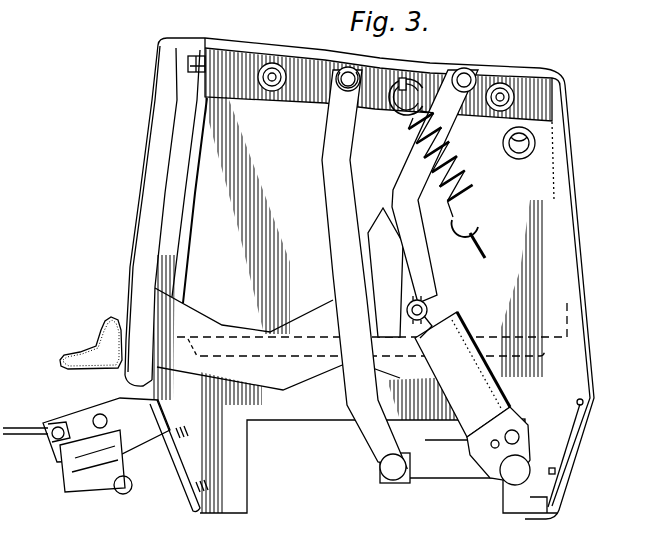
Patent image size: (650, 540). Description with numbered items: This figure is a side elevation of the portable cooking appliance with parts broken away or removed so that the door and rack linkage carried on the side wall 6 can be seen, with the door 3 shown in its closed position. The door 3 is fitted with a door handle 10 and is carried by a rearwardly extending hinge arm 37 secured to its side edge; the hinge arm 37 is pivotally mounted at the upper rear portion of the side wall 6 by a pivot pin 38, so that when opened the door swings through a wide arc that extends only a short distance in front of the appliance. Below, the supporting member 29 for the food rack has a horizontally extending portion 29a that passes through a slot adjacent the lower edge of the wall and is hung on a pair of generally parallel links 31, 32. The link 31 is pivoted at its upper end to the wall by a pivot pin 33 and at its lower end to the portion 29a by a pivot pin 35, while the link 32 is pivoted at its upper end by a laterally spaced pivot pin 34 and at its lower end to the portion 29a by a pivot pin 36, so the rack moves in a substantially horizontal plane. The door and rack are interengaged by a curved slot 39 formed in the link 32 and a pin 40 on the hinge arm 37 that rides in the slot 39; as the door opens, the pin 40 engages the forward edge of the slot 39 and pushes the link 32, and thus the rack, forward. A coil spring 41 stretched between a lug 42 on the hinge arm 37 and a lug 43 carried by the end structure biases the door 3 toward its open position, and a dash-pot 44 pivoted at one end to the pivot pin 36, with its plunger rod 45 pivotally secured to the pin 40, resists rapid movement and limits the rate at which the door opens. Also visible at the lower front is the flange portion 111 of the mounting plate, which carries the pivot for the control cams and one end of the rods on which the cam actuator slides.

The door 3 is at (151, 135).
The side wall 6 is at (548, 213).
The door handle 10 is at (80, 352).
The supporting member 29 is at (428, 427).
The horizontally extending portion 29a is at (443, 468).
The link 31 is at (333, 204).
The link 32 is at (362, 290).
The pivot pin 33 is at (341, 66).
The pivot pin 34 is at (468, 75).
The pivot pin 35 is at (390, 468).
The pivot pin 36 is at (517, 474).
The hinge arm 37 is at (182, 318).
The pivot pin 38 is at (536, 143).
The curved slot 39 is at (397, 287).
The pin 40 is at (434, 306).
The coil spring 41 is at (407, 134).
The lug 42 is at (484, 248).
The lug 43 is at (405, 76).
The dash-pot 44 is at (500, 395).
The plunger rod 45 is at (437, 313).
The flange portion 111 is at (145, 436).